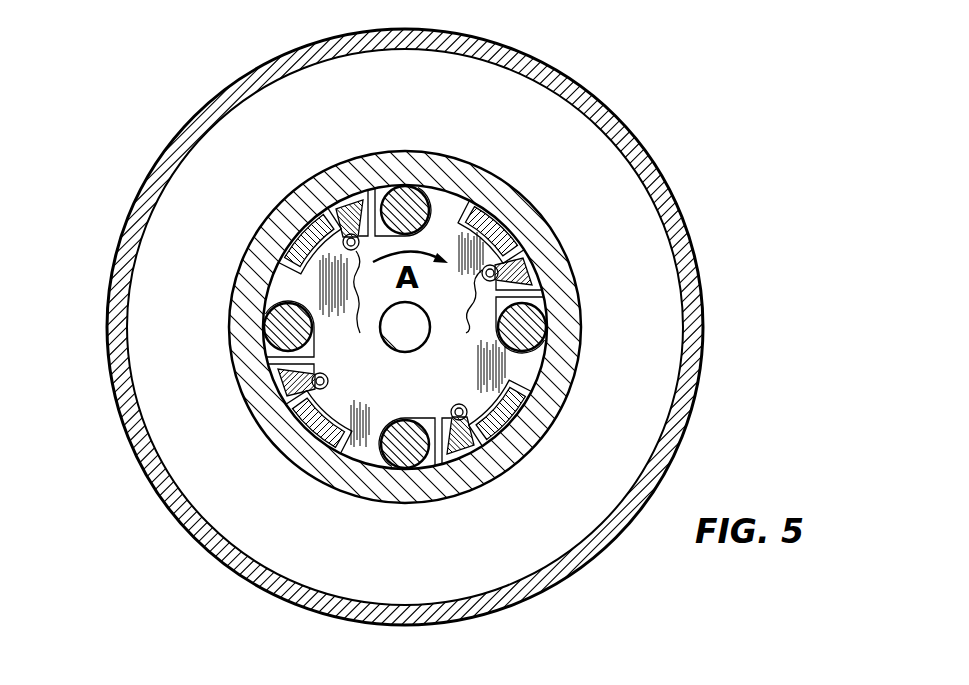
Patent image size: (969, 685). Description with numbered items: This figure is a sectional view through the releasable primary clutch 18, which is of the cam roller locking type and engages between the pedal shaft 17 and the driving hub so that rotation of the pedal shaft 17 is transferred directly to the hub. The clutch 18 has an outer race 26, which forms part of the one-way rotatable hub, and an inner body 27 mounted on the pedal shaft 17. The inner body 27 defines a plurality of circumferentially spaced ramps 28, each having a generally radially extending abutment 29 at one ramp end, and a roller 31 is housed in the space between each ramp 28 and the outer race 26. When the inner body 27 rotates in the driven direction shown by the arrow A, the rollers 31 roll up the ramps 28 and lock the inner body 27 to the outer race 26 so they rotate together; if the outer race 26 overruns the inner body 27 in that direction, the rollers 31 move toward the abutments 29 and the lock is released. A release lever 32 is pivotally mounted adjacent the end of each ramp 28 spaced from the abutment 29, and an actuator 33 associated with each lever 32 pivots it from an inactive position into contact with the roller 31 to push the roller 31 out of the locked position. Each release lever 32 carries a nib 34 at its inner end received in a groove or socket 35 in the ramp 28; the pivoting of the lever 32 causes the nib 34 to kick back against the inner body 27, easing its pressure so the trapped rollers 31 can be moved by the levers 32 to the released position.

The pedal shaft 17 is at (388, 345).
The releasable primary clutch 18 is at (540, 242).
The outer race 26 is at (267, 220).
The inner body 27 is at (282, 237).
The ramps 28 is at (372, 192).
The abutment 29 is at (456, 196).
The roller 31 is at (410, 187).
The release levers 32 is at (353, 200).
The actuator 33 is at (309, 222).
The nib 34 is at (349, 235).
The groove or socket 35 is at (323, 366).